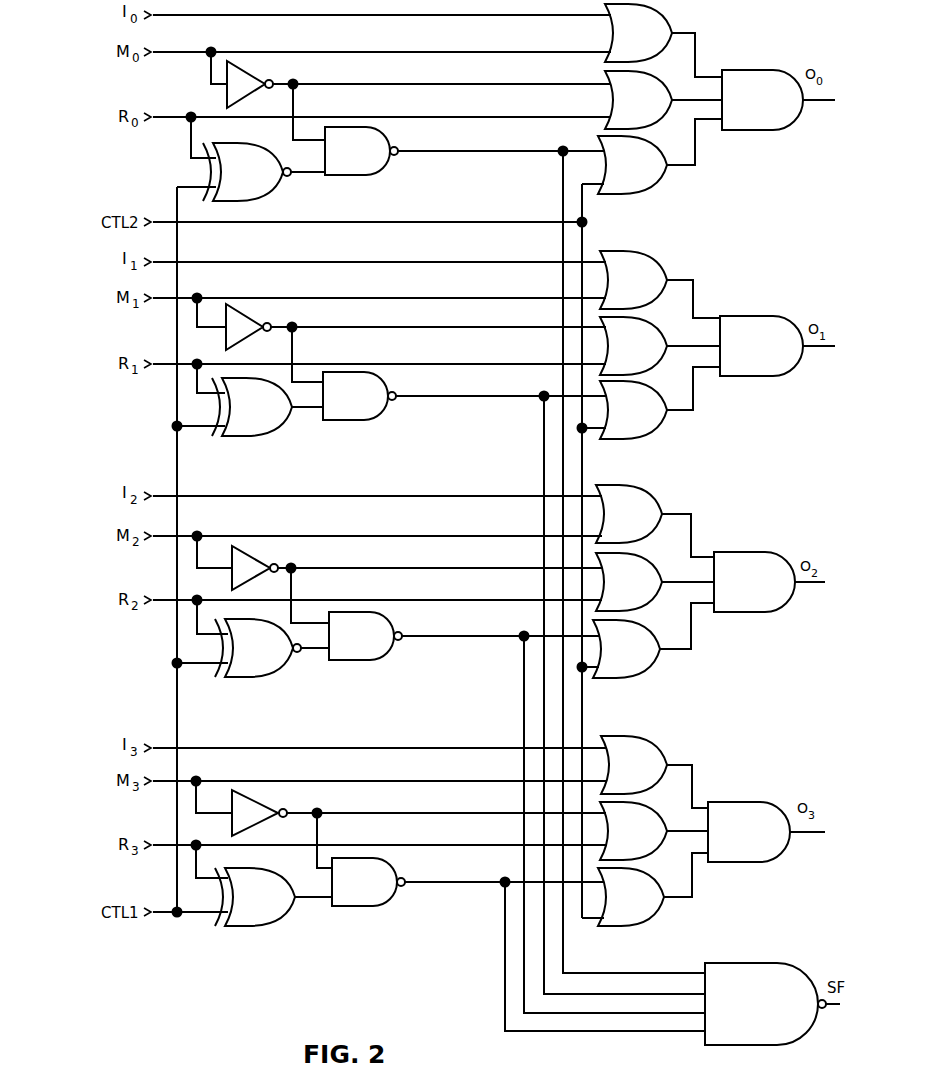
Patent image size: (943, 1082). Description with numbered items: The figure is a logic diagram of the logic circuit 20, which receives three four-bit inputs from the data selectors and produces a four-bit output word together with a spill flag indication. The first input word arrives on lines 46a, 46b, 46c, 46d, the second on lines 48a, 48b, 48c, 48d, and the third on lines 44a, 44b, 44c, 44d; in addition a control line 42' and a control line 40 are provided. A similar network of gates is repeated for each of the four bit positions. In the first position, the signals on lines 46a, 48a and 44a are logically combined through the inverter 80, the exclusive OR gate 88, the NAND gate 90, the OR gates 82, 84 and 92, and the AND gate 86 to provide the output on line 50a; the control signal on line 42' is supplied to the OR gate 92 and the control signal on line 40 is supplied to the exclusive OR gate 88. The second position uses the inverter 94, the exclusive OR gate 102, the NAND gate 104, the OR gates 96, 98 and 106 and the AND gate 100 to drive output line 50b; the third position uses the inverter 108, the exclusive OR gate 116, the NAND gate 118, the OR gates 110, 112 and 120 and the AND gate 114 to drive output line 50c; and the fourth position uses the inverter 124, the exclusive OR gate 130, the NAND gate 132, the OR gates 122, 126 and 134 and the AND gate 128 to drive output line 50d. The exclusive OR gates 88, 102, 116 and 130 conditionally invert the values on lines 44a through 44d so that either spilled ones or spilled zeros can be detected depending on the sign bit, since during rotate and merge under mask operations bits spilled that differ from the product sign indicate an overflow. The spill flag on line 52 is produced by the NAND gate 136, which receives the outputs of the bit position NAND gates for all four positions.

The logic circuit 20 is at (233, 946).
The control line 40 is at (190, 915).
The control line 42' is at (375, 550).
The input line 44a is at (171, 121).
The input line 44b is at (161, 366).
The input line 44c is at (158, 603).
The input line 44d is at (158, 848).
The input line 46a is at (217, 17).
The input line 46b is at (168, 262).
The input line 46c is at (166, 495).
The input line 46d is at (166, 748).
The input line 48a is at (186, 56).
The input line 48b is at (161, 300).
The input line 48c is at (161, 538).
The input line 48d is at (161, 783).
The output line 50a is at (811, 103).
The output line 50b is at (821, 350).
The output line 50c is at (815, 586).
The output line 50d is at (812, 835).
The spill flag line 52 is at (833, 1008).
The inverter 80 is at (231, 93).
The OR gate 82 is at (621, 42).
The OR gate 84 is at (621, 109).
The AND gate 86 is at (742, 109).
The exclusive OR gate 88 is at (237, 181).
The NAND gate 90 is at (337, 160).
The OR gate 92 is at (614, 174).
The inverter 94 is at (230, 336).
The OR gate 96 is at (616, 289).
The OR gate 98 is at (616, 355).
The AND gate 100 is at (736, 355).
The exclusive OR gate 102 is at (244, 416).
The NAND gate 104 is at (332, 405).
The OR gate 106 is at (613, 419).
The inverter 108 is at (235, 577).
The OR gate 110 is at (609, 523).
The OR gate 112 is at (609, 591).
The AND gate 114 is at (730, 591).
The exclusive OR gate 116 is at (246, 657).
The NAND gate 118 is at (338, 645).
The OR gate 120 is at (606, 658).
The OR gate 122 is at (614, 774).
The inverter 124 is at (238, 822).
The OR gate 126 is at (613, 840).
The AND gate 128 is at (724, 841).
The exclusive OR gate 130 is at (247, 906).
The NAND gate 132 is at (341, 891).
The OR gate 134 is at (611, 906).
The NAND gate 136 is at (718, 1009).